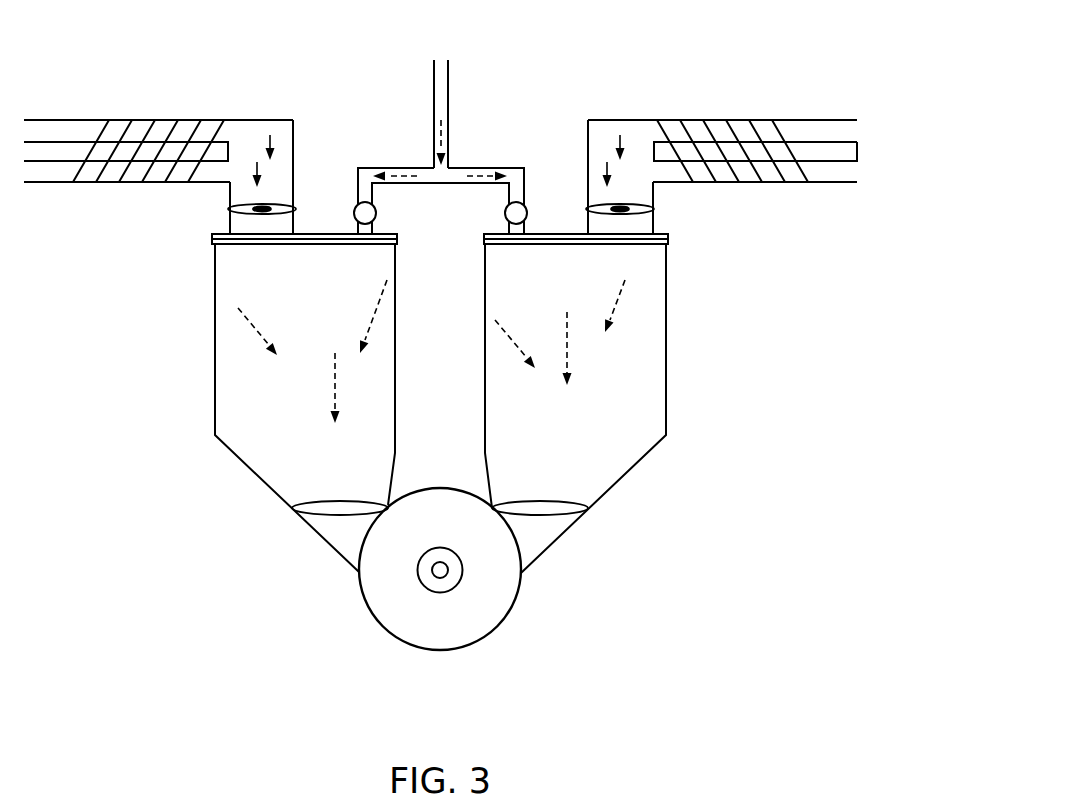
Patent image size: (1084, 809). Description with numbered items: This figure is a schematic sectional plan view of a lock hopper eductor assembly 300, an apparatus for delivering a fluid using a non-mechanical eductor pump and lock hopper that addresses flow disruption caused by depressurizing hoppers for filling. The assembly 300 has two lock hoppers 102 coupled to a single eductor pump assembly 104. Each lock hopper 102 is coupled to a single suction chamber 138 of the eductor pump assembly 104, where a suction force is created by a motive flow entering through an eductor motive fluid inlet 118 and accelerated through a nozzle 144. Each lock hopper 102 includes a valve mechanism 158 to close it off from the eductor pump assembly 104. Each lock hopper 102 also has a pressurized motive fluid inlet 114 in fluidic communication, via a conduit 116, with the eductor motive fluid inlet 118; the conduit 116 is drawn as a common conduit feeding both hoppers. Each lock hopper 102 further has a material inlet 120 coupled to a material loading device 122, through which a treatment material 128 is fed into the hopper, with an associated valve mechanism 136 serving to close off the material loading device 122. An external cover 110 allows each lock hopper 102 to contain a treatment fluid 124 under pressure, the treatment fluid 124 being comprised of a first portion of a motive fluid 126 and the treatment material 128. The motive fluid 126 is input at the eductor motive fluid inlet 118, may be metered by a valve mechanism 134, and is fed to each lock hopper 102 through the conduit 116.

The lock hopper eductor assembly 300 is at (712, 52).
The lock hopper 102 is at (215, 367).
The eductor pump assembly 104 is at (438, 569).
The external cover 110 is at (312, 245).
The pressurized motive fluid inlet 114 is at (355, 233).
The conduit 116 is at (434, 83).
The eductor motive fluid inlet 118 is at (448, 83).
The material inlet 120 is at (588, 233).
The material loading device 122 is at (107, 183).
The treatment fluid 124 is at (242, 320).
The motive fluid 126 is at (402, 175).
The treatment material 128 is at (263, 145).
The valve mechanism 134 is at (354, 216).
The valve mechanism 136 is at (230, 209).
The suction chamber 138 is at (503, 593).
The nozzle 144 is at (448, 590).
The valve mechanism 158 is at (297, 505).